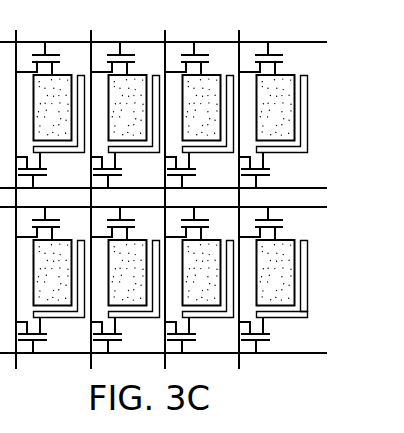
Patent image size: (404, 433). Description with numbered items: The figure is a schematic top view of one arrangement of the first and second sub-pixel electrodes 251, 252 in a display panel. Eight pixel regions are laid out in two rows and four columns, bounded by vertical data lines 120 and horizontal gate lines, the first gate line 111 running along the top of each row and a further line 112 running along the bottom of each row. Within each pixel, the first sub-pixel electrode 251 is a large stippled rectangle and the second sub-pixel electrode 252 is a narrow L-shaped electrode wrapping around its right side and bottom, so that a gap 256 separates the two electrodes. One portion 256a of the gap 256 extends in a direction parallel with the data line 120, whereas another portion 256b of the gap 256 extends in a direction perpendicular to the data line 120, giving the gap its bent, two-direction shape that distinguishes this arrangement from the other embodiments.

The data line 120 is at (240, 29).
The first gate line 111 is at (305, 42).
The second scan line 112 is at (308, 188).
The first sub-pixel electrode 251 is at (283, 82).
The gap 256 is at (302, 104).
The second sub-pixel electrode 252 is at (302, 134).
The portion of the gap 256a is at (302, 273).
The another portion of the gap 256b is at (280, 308).